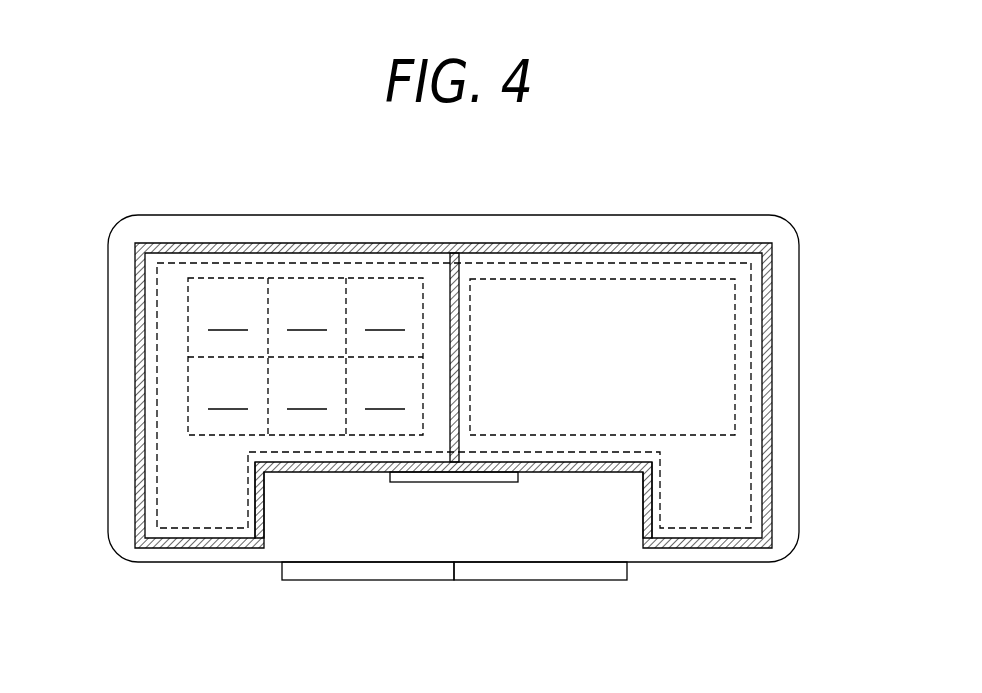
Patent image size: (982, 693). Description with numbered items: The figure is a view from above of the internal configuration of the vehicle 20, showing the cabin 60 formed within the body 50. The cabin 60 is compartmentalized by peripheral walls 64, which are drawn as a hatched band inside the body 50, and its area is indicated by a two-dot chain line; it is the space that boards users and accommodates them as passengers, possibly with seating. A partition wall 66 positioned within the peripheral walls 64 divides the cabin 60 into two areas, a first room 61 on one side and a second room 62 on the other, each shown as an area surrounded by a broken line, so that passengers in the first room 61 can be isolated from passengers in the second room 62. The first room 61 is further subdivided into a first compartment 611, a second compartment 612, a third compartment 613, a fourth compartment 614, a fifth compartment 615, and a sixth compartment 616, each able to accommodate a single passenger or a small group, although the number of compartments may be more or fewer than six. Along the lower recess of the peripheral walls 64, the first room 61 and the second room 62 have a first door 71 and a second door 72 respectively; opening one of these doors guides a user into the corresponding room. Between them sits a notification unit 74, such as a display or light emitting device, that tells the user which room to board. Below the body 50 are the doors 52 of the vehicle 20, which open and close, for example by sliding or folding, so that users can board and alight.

The vehicle 20 is at (642, 145).
The body 50 is at (799, 252).
The door 52 is at (362, 581).
The cabin 60 is at (732, 488).
The first room 61 is at (305, 297).
The first compartment 611 is at (228, 319).
The second compartment 612 is at (307, 319).
The third compartment 613 is at (385, 319).
The fourth compartment 614 is at (228, 398).
The fifth compartment 615 is at (307, 398).
The sixth compartment 616 is at (385, 398).
The second room 62 is at (676, 278).
The peripheral walls 64 is at (300, 243).
The partition wall 66 is at (458, 305).
The first door 71 is at (262, 505).
The second door 72 is at (644, 504).
The notification unit 74 is at (455, 482).